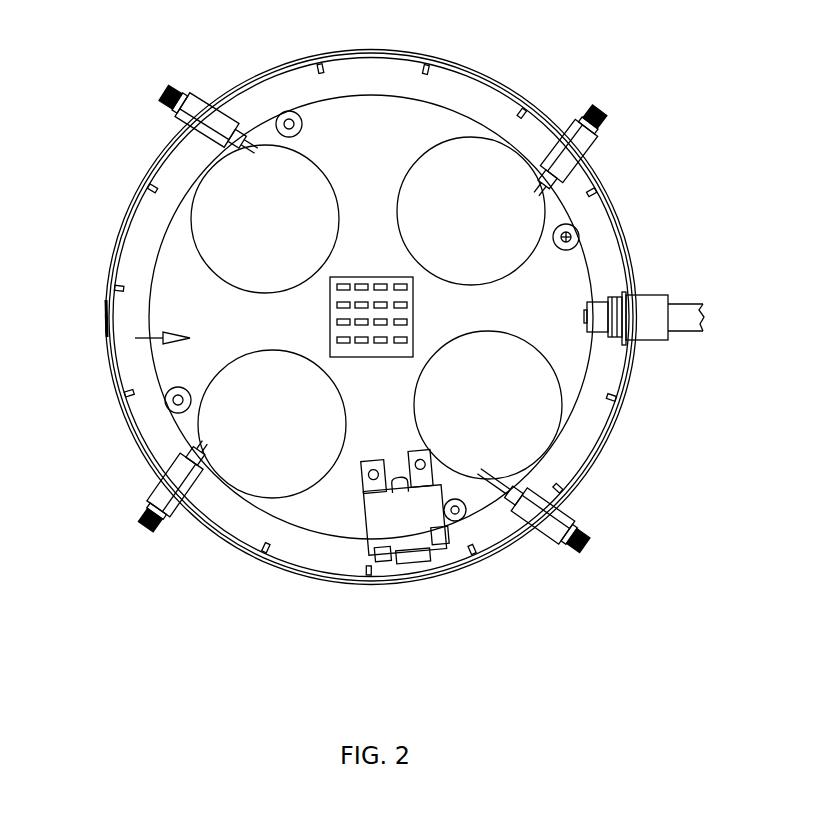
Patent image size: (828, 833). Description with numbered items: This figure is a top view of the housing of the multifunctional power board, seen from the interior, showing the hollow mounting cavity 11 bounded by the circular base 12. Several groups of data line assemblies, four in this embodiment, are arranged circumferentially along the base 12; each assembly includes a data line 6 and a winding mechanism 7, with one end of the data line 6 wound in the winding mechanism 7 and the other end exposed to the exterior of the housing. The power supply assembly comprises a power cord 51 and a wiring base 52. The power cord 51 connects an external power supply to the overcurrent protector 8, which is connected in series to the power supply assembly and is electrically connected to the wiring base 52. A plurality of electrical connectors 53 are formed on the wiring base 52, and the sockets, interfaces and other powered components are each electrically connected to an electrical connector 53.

The data line 6 is at (542, 522).
The winding mechanism 7 is at (513, 440).
The overcurrent protector 8 is at (408, 537).
The mounting cavity 11 is at (133, 340).
The base 12 is at (138, 281).
The power cord 51 is at (647, 317).
The wiring base 52 is at (353, 277).
The electrical connector 53 is at (365, 278).